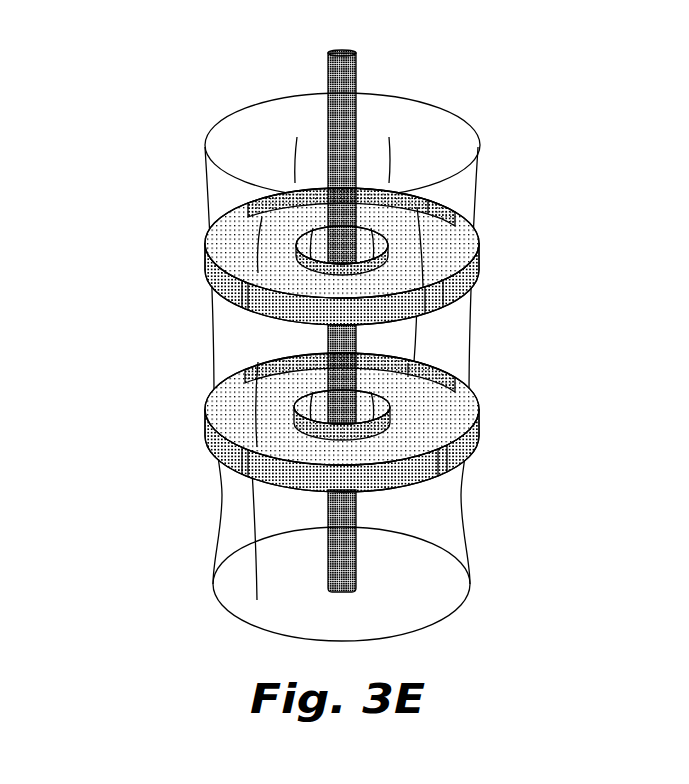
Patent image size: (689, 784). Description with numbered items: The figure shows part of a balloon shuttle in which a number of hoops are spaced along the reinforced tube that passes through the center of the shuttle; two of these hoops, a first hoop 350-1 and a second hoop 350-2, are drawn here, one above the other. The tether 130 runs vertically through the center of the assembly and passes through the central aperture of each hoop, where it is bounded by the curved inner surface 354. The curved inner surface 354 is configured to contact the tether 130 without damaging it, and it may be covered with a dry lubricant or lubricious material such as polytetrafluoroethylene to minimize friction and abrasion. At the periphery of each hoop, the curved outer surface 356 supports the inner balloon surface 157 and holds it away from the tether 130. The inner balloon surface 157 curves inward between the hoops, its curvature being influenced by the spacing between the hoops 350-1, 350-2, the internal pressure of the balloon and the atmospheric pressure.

The tether 130 is at (347, 73).
The inner balloon surface 157 is at (463, 332).
The hoop 350-1 is at (305, 245).
The hoop 350-2 is at (178, 421).
The curved inner surface 354 is at (305, 238).
The curved outer surface 356 is at (475, 268).